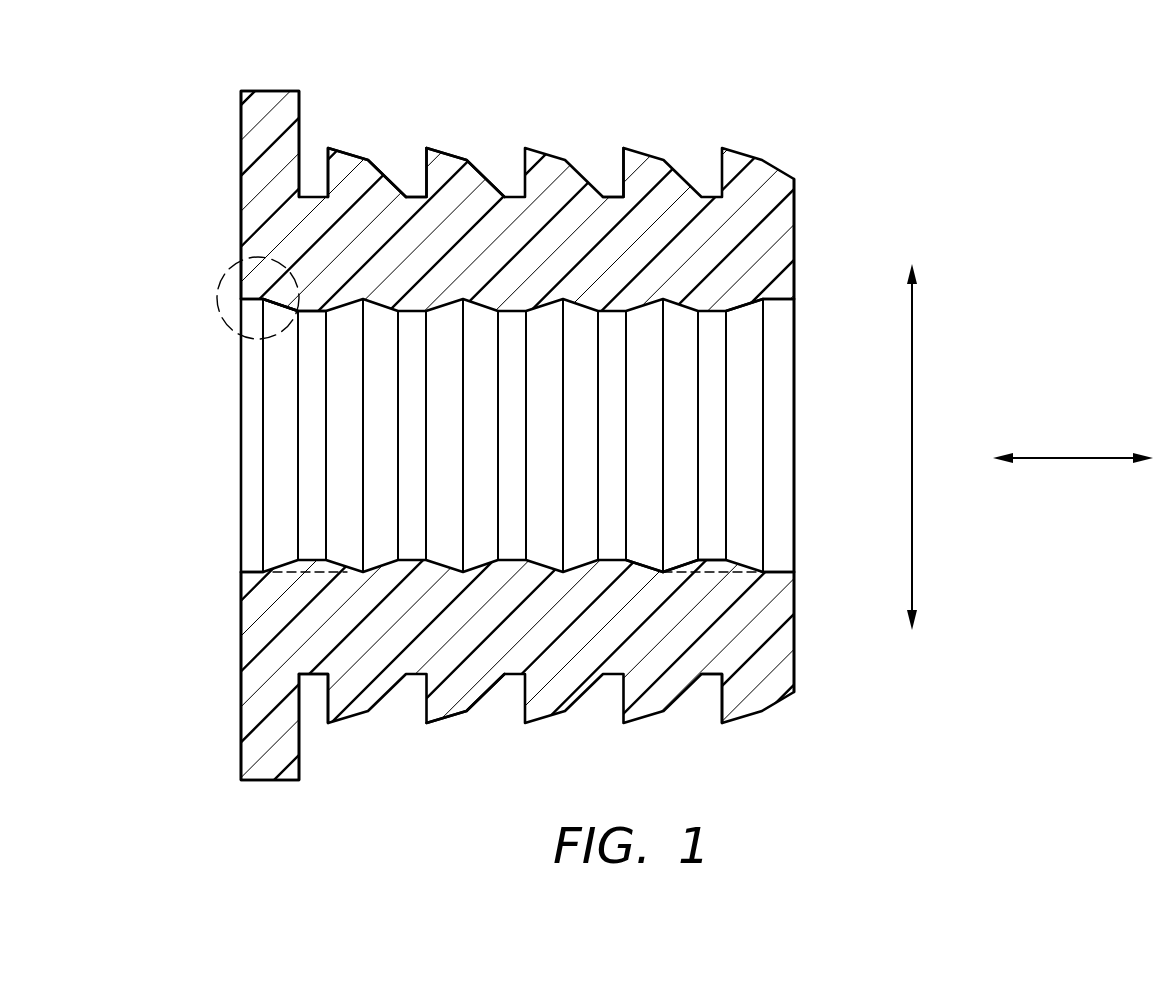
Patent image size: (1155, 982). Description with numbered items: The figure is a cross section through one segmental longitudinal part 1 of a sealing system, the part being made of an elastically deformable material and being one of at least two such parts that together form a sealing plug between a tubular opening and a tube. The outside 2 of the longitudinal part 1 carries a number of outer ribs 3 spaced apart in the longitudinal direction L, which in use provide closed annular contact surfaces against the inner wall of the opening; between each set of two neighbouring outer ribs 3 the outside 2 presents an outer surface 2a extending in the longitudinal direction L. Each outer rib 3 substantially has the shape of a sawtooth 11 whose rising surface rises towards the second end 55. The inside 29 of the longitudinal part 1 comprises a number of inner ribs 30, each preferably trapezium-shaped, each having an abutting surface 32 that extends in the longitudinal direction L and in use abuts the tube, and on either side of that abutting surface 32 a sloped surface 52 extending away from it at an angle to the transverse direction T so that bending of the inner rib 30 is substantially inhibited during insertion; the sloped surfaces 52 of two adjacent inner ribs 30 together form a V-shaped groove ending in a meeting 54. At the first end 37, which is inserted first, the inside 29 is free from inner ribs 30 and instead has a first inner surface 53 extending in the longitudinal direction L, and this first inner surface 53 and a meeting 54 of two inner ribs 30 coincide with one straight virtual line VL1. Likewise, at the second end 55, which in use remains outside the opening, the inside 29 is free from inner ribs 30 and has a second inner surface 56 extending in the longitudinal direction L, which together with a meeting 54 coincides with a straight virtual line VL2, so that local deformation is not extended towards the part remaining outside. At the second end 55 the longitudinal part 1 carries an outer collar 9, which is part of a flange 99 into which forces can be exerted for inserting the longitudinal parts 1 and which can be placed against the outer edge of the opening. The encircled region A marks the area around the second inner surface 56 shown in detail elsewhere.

The segmental longitudinal part 1 is at (836, 102).
The outside 2 is at (407, 195).
The outer surface 2a is at (608, 192).
The outer rib 3 is at (346, 158).
The collar 9 is at (266, 90).
The sawtooth 11 is at (445, 160).
The inside 29 is at (780, 573).
The inner rib 30 is at (627, 373).
The abutting surface 32 is at (727, 557).
The first end 37 is at (797, 210).
The sloped surface 52 is at (743, 310).
The first inner surface 53 is at (780, 302).
The meeting of two inner ribs 54 is at (670, 565).
The second end 55 is at (268, 252).
The second inner surface 56 is at (245, 315).
The flange 99 is at (240, 748).
The detail region A is at (220, 292).
The transverse direction T is at (913, 350).
The longitudinal direction L is at (1060, 458).
The straight virtual line VL1 is at (710, 573).
The straight virtual line VL2 is at (345, 574).